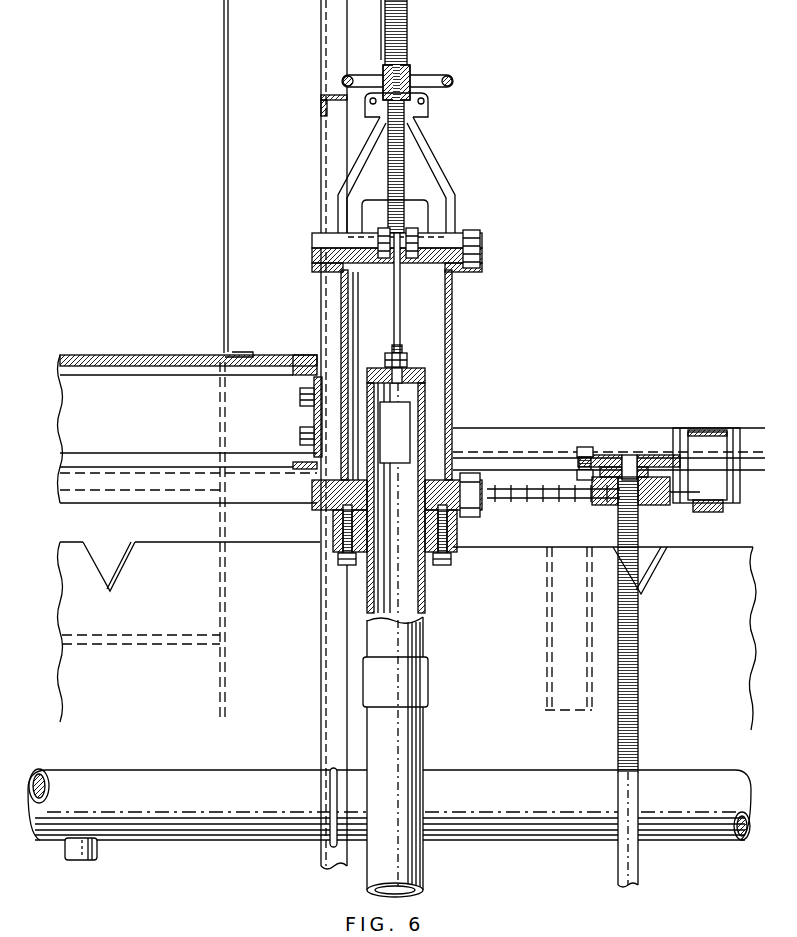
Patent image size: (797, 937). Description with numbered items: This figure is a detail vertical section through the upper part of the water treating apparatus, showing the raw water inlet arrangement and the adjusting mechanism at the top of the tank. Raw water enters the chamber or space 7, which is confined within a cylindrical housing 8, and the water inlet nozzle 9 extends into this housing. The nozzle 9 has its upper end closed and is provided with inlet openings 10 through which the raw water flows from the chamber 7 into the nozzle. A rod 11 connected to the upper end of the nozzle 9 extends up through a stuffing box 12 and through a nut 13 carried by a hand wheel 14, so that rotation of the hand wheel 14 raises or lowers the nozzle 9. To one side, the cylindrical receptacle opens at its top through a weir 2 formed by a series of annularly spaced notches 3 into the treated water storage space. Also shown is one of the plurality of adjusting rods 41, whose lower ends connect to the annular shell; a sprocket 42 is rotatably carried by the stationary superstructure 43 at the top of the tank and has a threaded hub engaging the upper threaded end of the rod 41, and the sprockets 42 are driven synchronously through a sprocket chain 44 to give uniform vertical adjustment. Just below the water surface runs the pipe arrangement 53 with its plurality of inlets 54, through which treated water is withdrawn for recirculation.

The weir 2 is at (253, 562).
The notches 3 is at (121, 562).
The chamber or space 7 is at (445, 323).
The cylindrical housing 8 is at (455, 365).
The water inlet nozzle 9 is at (410, 637).
The inlet openings 10 is at (407, 424).
The rod 11 is at (400, 297).
The stuffing box 12 is at (412, 242).
The nut 13 is at (405, 72).
The hand wheel 14 is at (440, 76).
The adjusting rods 41 is at (640, 690).
The sprockets 42 is at (657, 502).
The stationary superstructure 43 is at (520, 445).
The sprocket chain 44 is at (525, 500).
The pipe arrangement 53 is at (545, 818).
The inlets 54 is at (80, 858).